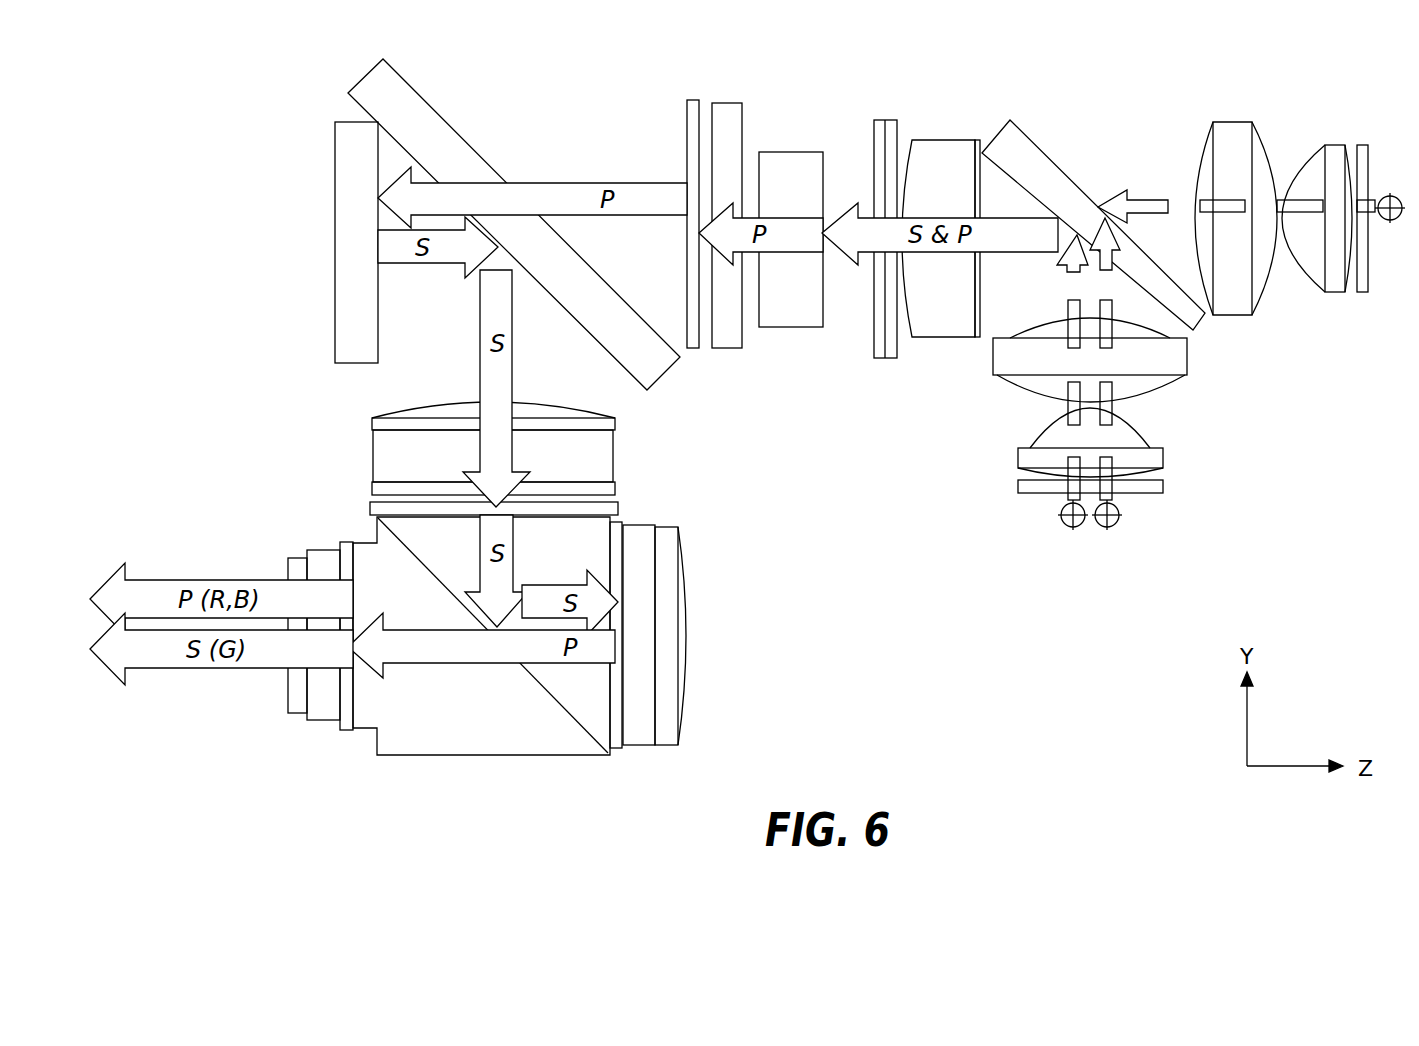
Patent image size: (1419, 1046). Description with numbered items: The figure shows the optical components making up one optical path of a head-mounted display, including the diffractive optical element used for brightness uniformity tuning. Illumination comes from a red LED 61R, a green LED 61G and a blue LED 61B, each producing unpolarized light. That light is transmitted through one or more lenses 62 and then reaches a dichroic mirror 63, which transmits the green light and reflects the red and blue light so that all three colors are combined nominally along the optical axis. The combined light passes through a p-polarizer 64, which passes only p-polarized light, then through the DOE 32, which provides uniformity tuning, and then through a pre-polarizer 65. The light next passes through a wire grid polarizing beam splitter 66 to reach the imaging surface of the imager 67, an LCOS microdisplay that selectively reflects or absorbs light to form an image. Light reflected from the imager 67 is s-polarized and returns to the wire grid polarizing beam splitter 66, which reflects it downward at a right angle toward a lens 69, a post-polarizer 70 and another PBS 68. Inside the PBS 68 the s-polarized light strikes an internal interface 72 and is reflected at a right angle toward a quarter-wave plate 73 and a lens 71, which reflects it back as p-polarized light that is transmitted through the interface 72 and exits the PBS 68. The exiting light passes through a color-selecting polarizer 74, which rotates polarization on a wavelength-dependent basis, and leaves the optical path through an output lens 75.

The DOE 32 is at (728, 100).
The green LED 61G is at (1390, 195).
The red LED 61R is at (1063, 528).
The blue LED 61B is at (1113, 527).
The lenses 62 is at (1208, 103).
The dichroic mirror 63 is at (1050, 165).
The p-polarizer 64 is at (790, 150).
The pre-polarizer 65 is at (685, 136).
The wire grid polarizing beam splitter 66 is at (442, 116).
The imager 67 is at (345, 363).
The PBS 68 is at (481, 671).
The lens 69 is at (617, 450).
The post-polarizer 70 is at (618, 507).
The lens 71 is at (687, 673).
The internal interface 72 is at (535, 680).
The quarter-wave plate 73 is at (617, 750).
The color-selecting polarizer 74 is at (345, 730).
The output lens 75 is at (297, 713).